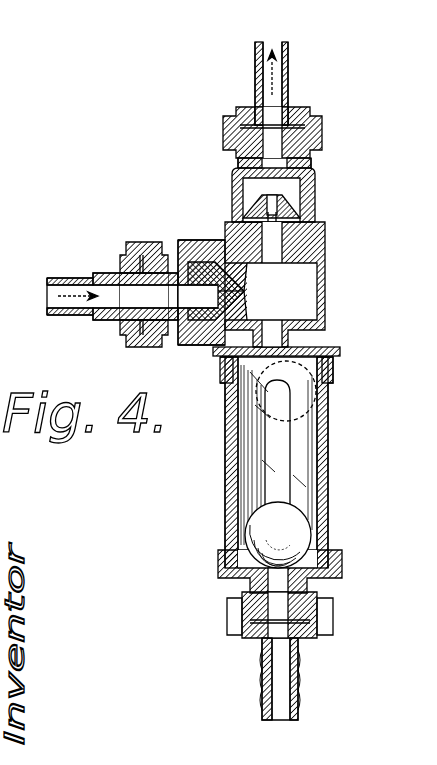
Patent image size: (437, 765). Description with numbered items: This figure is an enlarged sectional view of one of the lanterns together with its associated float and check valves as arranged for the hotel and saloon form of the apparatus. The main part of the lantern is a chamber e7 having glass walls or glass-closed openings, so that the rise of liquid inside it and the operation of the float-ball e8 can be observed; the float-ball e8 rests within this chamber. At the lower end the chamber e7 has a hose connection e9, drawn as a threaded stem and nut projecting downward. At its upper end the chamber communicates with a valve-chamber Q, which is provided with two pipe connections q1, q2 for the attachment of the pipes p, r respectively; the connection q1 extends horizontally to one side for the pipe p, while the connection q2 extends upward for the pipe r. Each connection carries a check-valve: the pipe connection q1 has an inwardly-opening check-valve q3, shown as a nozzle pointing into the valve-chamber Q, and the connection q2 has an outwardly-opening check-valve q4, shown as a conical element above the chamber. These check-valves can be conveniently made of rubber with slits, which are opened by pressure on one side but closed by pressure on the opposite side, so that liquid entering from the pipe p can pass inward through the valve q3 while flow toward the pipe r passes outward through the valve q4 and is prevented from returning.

The pipe r is at (256, 62).
The pipe connection q2 is at (223, 134).
The outwardly-opening check-valve q4 is at (262, 203).
The valve-chamber Q is at (267, 284).
The inwardly-opening check-valve q3 is at (246, 291).
The pipe connection q1 is at (152, 243).
The pipe p is at (63, 280).
The chamber e7 is at (262, 410).
The float-ball e8 is at (278, 535).
The hose connection e9 is at (227, 610).